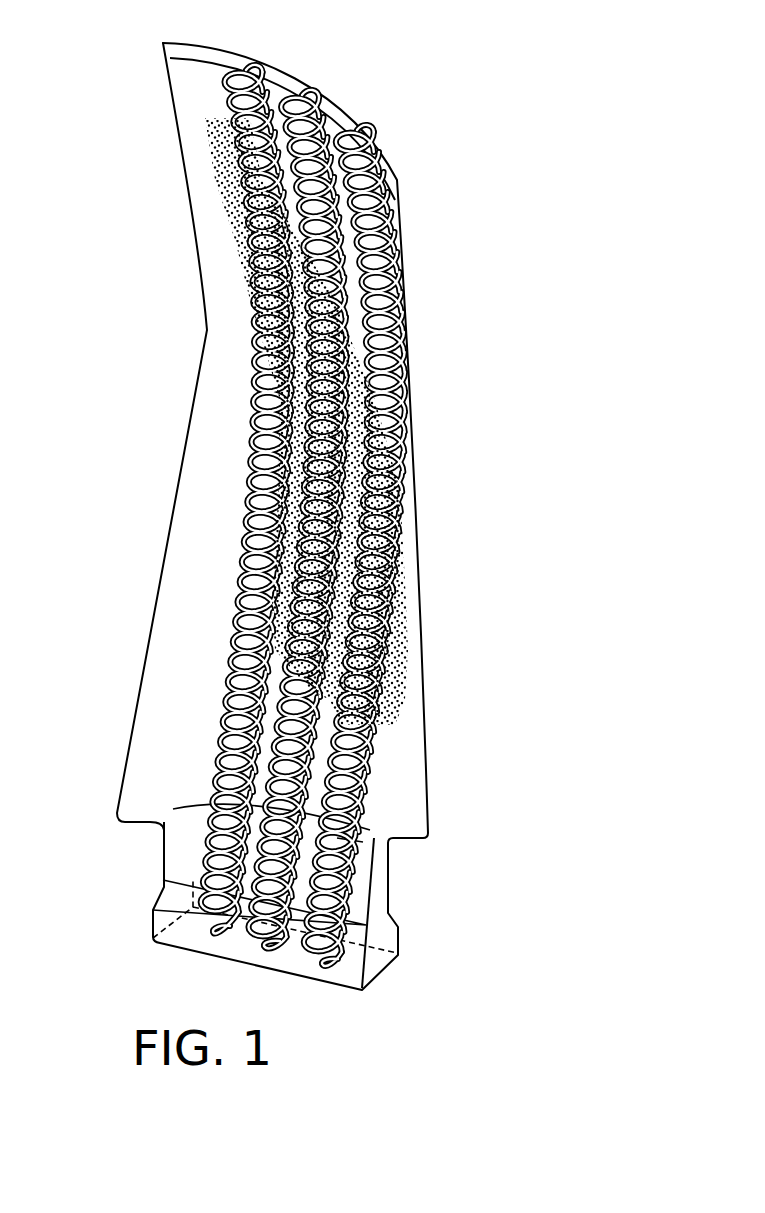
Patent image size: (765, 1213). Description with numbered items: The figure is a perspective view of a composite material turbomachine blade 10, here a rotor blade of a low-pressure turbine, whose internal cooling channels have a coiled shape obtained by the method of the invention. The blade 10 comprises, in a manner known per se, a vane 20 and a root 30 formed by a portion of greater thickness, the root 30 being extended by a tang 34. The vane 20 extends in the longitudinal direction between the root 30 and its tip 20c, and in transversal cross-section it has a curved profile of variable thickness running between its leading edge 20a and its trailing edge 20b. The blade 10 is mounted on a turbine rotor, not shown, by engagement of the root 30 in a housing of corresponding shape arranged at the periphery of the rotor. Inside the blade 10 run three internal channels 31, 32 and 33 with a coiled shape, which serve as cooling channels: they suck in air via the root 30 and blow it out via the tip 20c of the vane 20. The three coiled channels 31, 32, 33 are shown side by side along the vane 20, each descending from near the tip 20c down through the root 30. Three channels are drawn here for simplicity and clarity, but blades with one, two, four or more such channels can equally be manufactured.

The blade 10 is at (259, 540).
The vane 20 is at (278, 540).
The leading edge 20a is at (157, 562).
The trailing edge 20b is at (422, 553).
The tip 20c is at (345, 123).
The root 30 is at (390, 977).
The internal channel 31 is at (373, 730).
The internal channel 32 is at (365, 767).
The internal channel 33 is at (247, 510).
The tang 34 is at (164, 846).